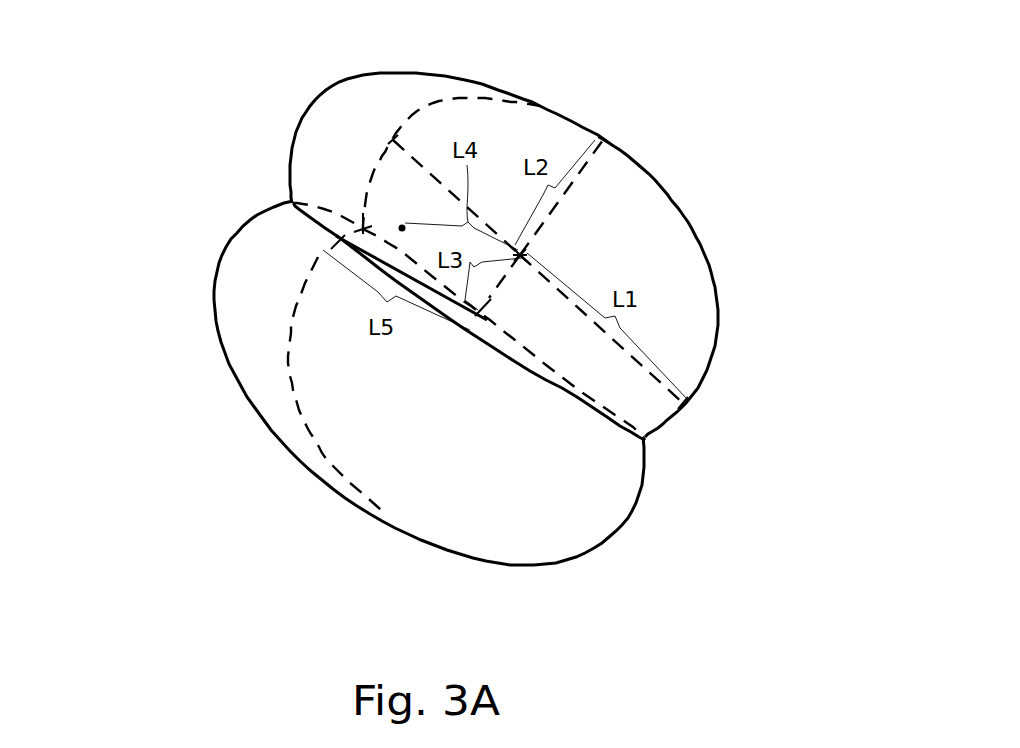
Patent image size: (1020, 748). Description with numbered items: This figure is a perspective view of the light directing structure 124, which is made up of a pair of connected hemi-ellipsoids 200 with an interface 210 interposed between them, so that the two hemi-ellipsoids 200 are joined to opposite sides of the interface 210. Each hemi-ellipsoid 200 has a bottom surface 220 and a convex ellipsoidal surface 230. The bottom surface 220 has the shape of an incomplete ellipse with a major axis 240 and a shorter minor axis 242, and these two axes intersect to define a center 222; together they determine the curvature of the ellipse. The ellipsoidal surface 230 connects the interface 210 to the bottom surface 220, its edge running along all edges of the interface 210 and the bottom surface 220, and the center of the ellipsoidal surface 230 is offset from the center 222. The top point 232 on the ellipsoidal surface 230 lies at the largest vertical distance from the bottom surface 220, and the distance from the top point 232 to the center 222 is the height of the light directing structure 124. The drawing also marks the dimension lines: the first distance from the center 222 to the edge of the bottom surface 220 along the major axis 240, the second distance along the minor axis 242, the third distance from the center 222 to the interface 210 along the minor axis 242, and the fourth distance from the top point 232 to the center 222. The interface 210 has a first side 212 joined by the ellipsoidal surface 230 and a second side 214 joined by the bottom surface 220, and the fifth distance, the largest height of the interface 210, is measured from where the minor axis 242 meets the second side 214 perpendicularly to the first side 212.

The light directing structure 124 is at (96, 79).
The hemi-ellipsoid 200 is at (330, 114).
The interface 210 is at (322, 212).
The first side 212 is at (557, 398).
The second side 214 is at (598, 525).
The bottom surface 220 is at (687, 245).
The center 222 is at (527, 253).
The ellipsoidal surface 230 is at (413, 113).
The top point 232 is at (400, 227).
The major axis 240 is at (666, 393).
The minor axis 242 is at (590, 170).